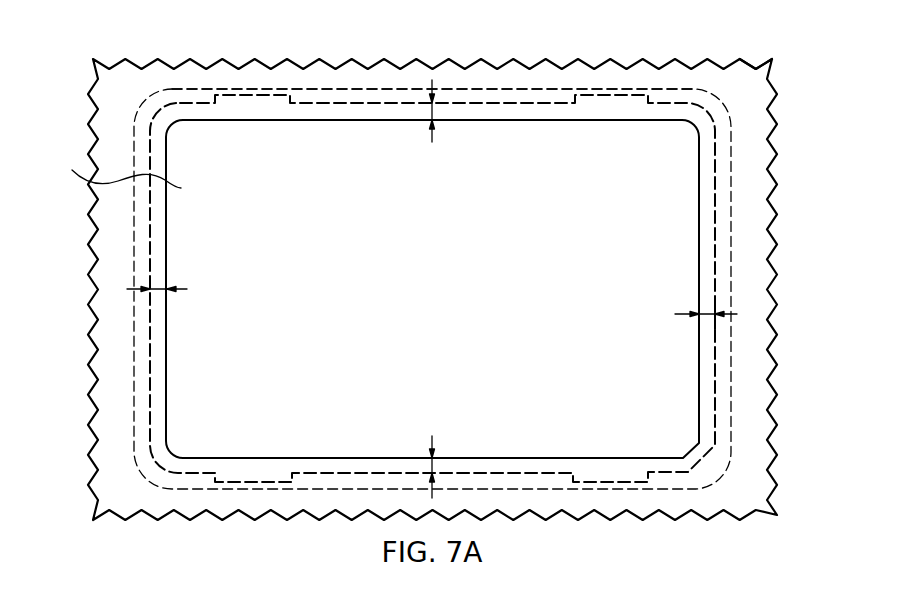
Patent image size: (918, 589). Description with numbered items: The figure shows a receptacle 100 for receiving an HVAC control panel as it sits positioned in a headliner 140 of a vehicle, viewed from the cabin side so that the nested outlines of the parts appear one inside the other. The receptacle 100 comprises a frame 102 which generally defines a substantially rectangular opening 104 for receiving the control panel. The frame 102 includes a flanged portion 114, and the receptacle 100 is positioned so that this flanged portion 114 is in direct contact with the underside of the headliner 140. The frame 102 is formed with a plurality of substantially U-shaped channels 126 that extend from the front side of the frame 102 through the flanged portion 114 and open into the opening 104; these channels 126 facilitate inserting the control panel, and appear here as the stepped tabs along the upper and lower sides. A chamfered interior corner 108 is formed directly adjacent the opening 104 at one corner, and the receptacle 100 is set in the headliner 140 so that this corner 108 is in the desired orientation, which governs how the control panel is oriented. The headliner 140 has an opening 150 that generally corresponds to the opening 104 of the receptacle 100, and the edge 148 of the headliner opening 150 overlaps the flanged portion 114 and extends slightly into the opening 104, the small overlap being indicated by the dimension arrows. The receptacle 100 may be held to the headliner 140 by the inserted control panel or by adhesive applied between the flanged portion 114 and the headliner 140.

The receptacle 100 is at (268, 87).
The frame 102 is at (715, 295).
The opening 104 is at (413, 292).
The chamfered interior corner 108 is at (700, 458).
The flanged portion 114 is at (724, 246).
The substantially U-shaped channels 126 is at (260, 99).
The headliner 140 is at (751, 86).
The edge 148 is at (432, 119).
The headliner opening 150 is at (107, 170).